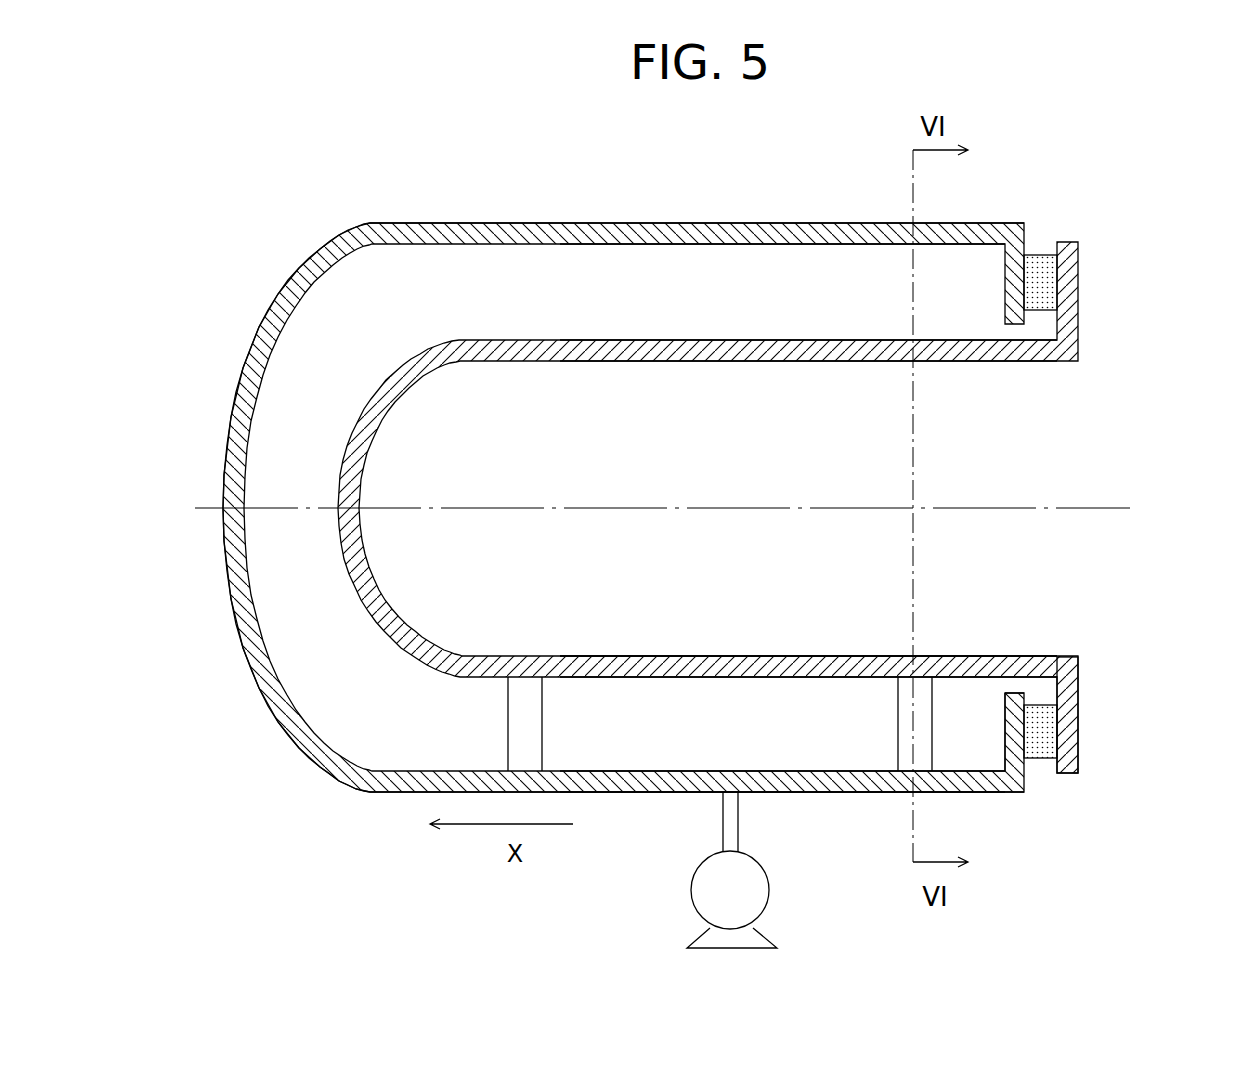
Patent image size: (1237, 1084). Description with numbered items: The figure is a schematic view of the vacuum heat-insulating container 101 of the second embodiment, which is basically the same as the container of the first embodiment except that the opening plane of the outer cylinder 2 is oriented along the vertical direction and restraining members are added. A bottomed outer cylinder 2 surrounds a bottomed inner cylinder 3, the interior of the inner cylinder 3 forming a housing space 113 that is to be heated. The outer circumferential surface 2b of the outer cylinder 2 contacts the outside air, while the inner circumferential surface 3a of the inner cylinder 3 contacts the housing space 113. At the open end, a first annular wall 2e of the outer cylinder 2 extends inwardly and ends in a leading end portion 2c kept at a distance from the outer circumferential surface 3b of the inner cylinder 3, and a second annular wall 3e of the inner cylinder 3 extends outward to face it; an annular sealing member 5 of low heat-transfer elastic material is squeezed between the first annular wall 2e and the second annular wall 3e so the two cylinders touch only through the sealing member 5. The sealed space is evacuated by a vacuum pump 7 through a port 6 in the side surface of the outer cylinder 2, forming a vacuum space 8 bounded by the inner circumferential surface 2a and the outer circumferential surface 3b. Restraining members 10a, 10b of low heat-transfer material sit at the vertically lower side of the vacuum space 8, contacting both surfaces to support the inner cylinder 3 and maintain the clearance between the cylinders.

The vacuum heat-insulating container 101 is at (680, 165).
The housing space 113 is at (933, 437).
The outer cylinder 2 is at (630, 785).
The inner circumferential surface of the outer cylinder 2a is at (680, 762).
The outer circumferential surface of the outer cylinder 2b is at (680, 802).
The leading end portion 2c is at (1020, 683).
The first annular wall 2e is at (1005, 718).
The inner cylinder 3 is at (750, 668).
The inner circumferential surface of the inner cylinder 3a is at (793, 648).
The outer circumferential surface of the inner cylinder 3b is at (793, 686).
The second annular wall 3e is at (1072, 715).
The sealing member 5 is at (1050, 742).
The port 6 is at (732, 828).
The vacuum pump 7 is at (697, 916).
The vacuum space 8 is at (822, 703).
The restraining member 10a is at (898, 723).
The restraining member 10b is at (542, 708).